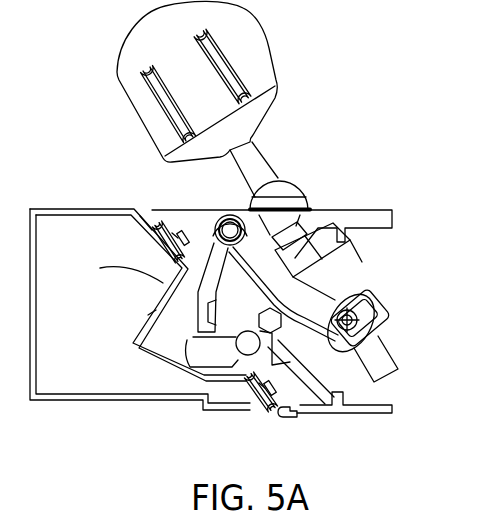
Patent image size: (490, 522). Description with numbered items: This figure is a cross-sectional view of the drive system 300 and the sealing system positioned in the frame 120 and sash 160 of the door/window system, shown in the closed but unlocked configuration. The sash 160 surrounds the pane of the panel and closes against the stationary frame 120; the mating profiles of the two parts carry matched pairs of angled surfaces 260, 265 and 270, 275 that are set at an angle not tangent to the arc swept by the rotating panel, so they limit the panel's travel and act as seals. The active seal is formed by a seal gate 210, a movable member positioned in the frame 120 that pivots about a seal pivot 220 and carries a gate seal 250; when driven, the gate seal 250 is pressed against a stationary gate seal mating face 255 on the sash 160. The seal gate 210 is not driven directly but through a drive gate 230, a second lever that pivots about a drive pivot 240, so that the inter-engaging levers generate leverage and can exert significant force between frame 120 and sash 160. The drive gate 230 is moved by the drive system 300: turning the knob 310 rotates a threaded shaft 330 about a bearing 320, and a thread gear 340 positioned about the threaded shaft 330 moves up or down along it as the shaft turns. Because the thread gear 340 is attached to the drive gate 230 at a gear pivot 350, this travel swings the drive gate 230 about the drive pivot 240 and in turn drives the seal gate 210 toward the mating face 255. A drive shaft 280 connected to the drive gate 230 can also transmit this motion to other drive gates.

The stationary frame 120 is at (360, 415).
The sash 160 is at (112, 401).
The seal gate 210 is at (168, 287).
The seal pivot 220 is at (223, 208).
The drive gate 230 is at (335, 250).
The drive pivot 240 is at (342, 276).
The gate seal 250 is at (152, 356).
The gate seal mating face 255 is at (148, 315).
The angled surface 260 is at (150, 216).
The angled surface 265 is at (152, 240).
The angled surface 270 is at (279, 416).
The angled surface 275 is at (267, 415).
The drive shaft 280 is at (330, 412).
The drive system 300 is at (322, 148).
The knob 310 is at (270, 57).
The bearing 320 is at (300, 193).
The threaded shaft 330 is at (395, 365).
The thread gear 340 is at (393, 297).
The gear pivot 350 is at (387, 322).